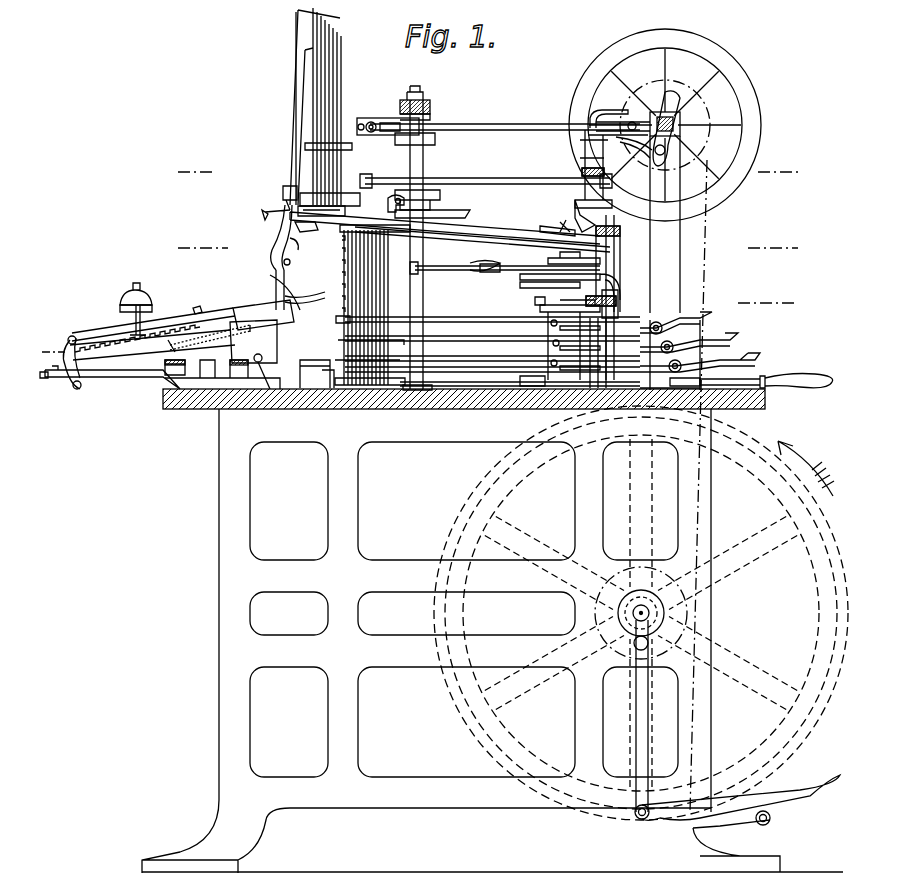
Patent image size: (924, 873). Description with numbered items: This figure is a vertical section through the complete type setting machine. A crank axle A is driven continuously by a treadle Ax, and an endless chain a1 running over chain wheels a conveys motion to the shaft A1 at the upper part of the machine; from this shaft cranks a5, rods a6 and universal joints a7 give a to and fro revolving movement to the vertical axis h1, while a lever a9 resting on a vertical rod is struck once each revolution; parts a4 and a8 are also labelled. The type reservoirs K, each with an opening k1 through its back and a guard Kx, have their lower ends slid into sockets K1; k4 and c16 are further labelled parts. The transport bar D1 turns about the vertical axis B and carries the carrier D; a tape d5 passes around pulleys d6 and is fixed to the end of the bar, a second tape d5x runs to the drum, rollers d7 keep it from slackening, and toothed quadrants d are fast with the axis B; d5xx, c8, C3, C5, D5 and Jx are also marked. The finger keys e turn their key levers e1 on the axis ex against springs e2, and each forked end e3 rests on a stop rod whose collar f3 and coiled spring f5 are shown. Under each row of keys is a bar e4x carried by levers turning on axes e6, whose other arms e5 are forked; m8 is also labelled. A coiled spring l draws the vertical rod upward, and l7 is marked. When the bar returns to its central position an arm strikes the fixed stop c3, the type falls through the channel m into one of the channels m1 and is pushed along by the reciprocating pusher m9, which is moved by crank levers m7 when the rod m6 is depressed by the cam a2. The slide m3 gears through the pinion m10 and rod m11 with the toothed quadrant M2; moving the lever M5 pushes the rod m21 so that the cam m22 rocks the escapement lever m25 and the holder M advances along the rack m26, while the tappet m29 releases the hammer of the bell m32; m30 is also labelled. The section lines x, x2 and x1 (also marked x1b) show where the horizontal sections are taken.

The chain wheel a is at (615, 608).
The crank axle A is at (641, 613).
The treadle Ax is at (790, 805).
The endless chain a1 is at (711, 262).
The cam a2 is at (662, 165).
The pin a4 is at (662, 150).
The crank a5 is at (634, 126).
The rod a6 is at (497, 126).
The universal joint a7 is at (375, 119).
The crank arm a8 is at (675, 90).
The lever a9 is at (612, 112).
The shaft A1 is at (676, 127).
The vertical axis h1 is at (418, 170).
The tape d5 is at (380, 220).
The pulley d6 is at (425, 216).
The transport bar D1 is at (445, 225).
The bar C3 is at (482, 249).
The block c16 is at (548, 221).
The vertical axis B is at (580, 206).
The link C5 is at (555, 223).
The rod d5xx is at (505, 263).
The coupling c8 is at (465, 268).
The toothed quadrant d is at (565, 262).
The tape d5x is at (446, 273).
The roller d7 is at (488, 275).
The frame D5 is at (520, 278).
The coiled spring l is at (625, 262).
The block l7 is at (622, 288).
The rod m6 is at (620, 238).
The key-lever e1 is at (480, 328).
The axis ex is at (548, 326).
The spring e2 is at (571, 348).
The lever arm e5 is at (614, 353).
The bar m8 is at (488, 388).
The toothed quadrant M2 is at (535, 388).
The finger key e is at (690, 315).
The bar e4x is at (740, 352).
The axis e6 is at (706, 372).
The lever M5 is at (783, 375).
The coiled spring f5 is at (345, 272).
The collar f3 is at (345, 248).
The forked end of key lever e3 is at (343, 319).
The crank lever m7 is at (323, 370).
The reciprocating pusher m9 is at (322, 292).
The socket K1 is at (298, 118).
The type reservoir K is at (296, 88).
The guard Kx is at (288, 197).
The cross bar k4 is at (345, 197).
The opening k1 is at (310, 222).
The carrier D is at (277, 237).
The lever Jx is at (286, 256).
The fixed stop c3 is at (297, 267).
The channel m is at (260, 303).
The holder M is at (224, 312).
The slide m3 is at (175, 318).
The tappet m29 is at (200, 308).
The channel m1 is at (208, 332).
The pinion m10 is at (90, 346).
The rod m11 is at (110, 374).
The bell m32 is at (125, 300).
The cap m30 is at (122, 306).
The cam m22 is at (269, 358).
The rack m26 is at (203, 365).
The escapement lever m25 is at (266, 371).
The rod m21 is at (296, 390).
The section line x² x2 is at (488, 172).
The section line x is at (486, 248).
The section line x' x1 is at (779, 302).
The section line x' x1b is at (51, 342).